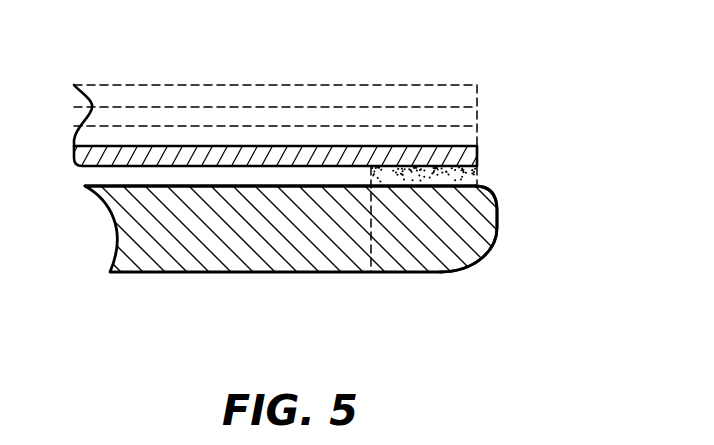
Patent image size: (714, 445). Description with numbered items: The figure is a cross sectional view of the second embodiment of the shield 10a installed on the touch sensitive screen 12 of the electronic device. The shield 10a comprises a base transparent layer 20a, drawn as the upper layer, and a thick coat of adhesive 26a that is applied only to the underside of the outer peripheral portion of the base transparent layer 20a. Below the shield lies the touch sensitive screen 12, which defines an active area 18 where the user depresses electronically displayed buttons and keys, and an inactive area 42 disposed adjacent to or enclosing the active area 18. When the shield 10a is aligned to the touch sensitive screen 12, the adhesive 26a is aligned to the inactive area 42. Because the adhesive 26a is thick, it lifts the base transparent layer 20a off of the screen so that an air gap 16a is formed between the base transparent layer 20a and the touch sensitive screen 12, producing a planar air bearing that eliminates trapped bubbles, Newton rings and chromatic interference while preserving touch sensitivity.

The shield 10a is at (503, 145).
The touch sensitive screen 12 is at (533, 185).
The air gap 16a is at (258, 176).
The active area 18 is at (153, 243).
The base transparent layer 20a is at (245, 148).
The adhesive 26a is at (405, 148).
The inactive area 42 is at (432, 243).